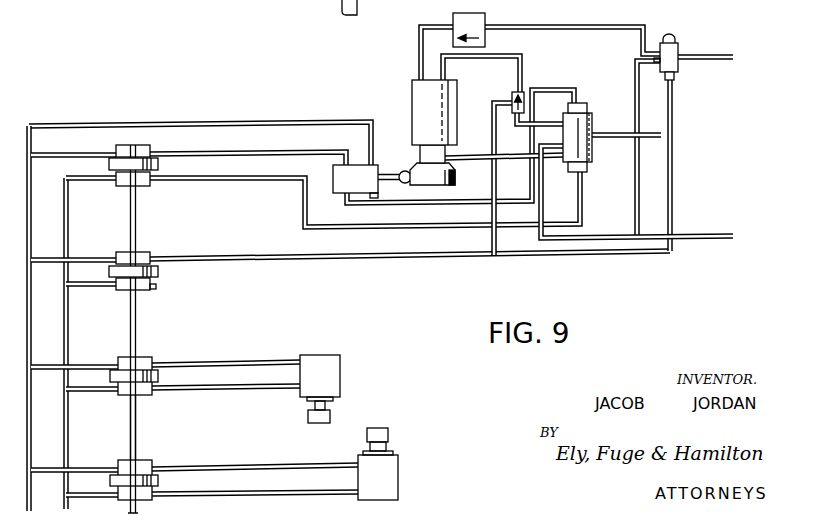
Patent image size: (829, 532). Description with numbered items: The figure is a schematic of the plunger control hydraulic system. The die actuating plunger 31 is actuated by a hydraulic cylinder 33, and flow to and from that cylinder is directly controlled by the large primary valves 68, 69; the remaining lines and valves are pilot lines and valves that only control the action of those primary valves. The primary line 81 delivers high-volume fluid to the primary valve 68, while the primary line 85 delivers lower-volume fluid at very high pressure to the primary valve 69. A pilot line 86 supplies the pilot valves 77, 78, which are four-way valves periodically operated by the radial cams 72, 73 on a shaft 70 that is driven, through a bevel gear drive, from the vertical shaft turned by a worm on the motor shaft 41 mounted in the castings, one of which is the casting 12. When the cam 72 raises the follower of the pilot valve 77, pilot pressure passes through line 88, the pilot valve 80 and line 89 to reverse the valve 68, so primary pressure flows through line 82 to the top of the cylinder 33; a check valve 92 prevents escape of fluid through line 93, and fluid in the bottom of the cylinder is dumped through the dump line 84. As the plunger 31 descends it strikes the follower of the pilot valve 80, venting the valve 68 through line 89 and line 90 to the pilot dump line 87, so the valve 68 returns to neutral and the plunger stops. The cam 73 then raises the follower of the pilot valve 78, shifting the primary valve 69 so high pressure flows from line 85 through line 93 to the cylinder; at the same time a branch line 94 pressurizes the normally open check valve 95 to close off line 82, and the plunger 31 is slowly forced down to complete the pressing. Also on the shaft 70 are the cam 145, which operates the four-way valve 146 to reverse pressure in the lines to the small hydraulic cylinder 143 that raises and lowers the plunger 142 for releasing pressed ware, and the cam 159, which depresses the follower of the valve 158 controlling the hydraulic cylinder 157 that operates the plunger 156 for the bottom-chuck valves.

The casting 12 is at (194, 7).
The shaft 41 is at (358, 8).
The check valve 92 is at (482, 17).
The line 93 is at (574, 24).
The primary valve 69 is at (680, 48).
The primary line 85 is at (733, 52).
The hydraulic cylinder 33 is at (412, 88).
The check valve 95 is at (512, 95).
The line 82 is at (524, 78).
The primary valve 68 is at (592, 125).
The primary line 81 is at (662, 134).
The pilot valve 77 is at (149, 146).
The cam 72 is at (158, 164).
The line 88 is at (277, 126).
The pilot valve 80 is at (376, 165).
The die actuating plunger 31 is at (455, 178).
The line 89 is at (444, 204).
The pilot dump line 87 is at (31, 238).
The pilot valve 78 is at (150, 252).
The cam 73 is at (158, 272).
The line 90 is at (405, 229).
The branch line 94 is at (490, 235).
The primary dump line 84 is at (616, 222).
The shaft 70 is at (137, 329).
The cam 145 is at (158, 377).
The four-way valve 146 is at (150, 395).
The hydraulic cylinder 143 is at (341, 364).
The plunger 142 is at (332, 413).
The pilot line 86 is at (68, 444).
The valve 158 is at (152, 460).
The cam 159 is at (158, 481).
The plunger 156 is at (389, 433).
The hydraulic cylinder 157 is at (400, 468).